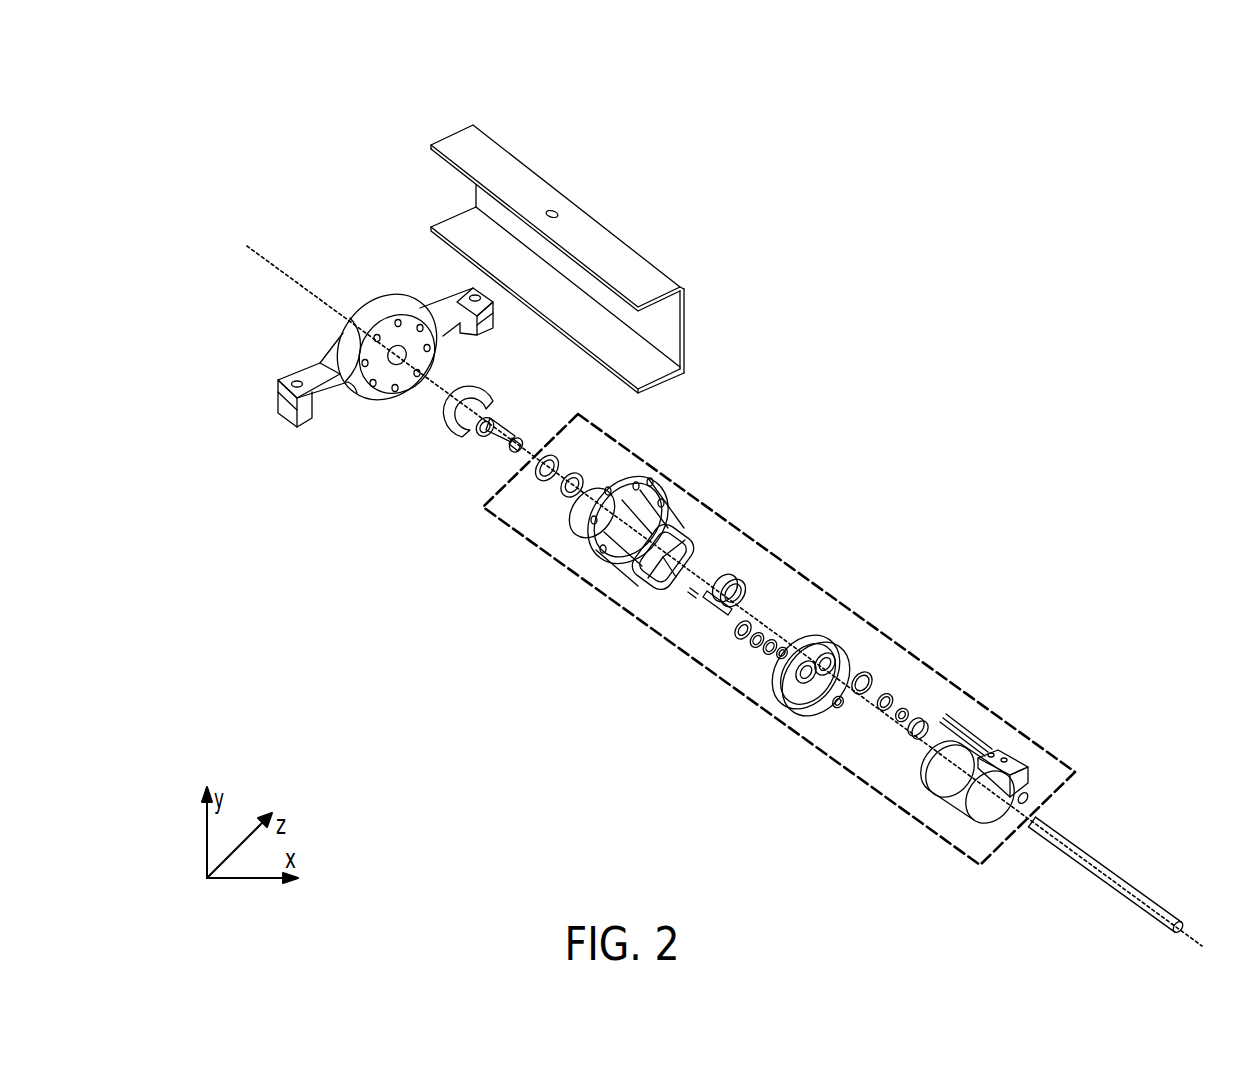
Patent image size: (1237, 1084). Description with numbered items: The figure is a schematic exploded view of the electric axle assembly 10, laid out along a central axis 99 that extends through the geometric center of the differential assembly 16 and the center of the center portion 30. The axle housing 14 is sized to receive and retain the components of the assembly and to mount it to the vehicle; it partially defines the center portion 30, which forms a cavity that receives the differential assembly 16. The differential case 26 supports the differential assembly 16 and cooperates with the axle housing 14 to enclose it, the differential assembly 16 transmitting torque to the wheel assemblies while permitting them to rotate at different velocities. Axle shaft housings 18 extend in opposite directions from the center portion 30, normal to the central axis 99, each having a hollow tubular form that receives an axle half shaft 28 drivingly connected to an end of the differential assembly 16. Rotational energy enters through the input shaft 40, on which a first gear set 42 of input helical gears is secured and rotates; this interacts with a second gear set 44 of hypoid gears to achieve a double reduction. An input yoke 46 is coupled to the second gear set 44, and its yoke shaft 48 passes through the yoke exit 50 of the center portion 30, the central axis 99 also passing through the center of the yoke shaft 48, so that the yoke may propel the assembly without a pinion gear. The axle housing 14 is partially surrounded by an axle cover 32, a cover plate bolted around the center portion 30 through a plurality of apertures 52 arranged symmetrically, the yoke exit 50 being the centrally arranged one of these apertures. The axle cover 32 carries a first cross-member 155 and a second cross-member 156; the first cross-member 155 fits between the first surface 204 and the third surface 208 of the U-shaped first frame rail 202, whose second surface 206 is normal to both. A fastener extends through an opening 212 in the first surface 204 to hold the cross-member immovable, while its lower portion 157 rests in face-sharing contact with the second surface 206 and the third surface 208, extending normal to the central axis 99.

The electric axle assembly 10 is at (645, 123).
The axle housing 14 is at (629, 545).
The differential assembly 16 is at (888, 545).
The axle shaft housing 18 is at (311, 424).
The differential case 26 is at (782, 727).
The axle half shaft 28 is at (389, 372).
The center portion 30 is at (370, 348).
The axle cover 32 is at (360, 300).
The input shaft 40 is at (1136, 886).
The first gear set 42 is at (895, 772).
The second gear set 44 is at (628, 600).
The input yoke 46 is at (465, 440).
The yoke shaft 48 is at (513, 426).
The yoke exit 50 is at (393, 385).
The apertures 52 is at (362, 362).
The central axis 99 is at (283, 265).
The first cross-member 155 is at (452, 298).
The second cross-member 156 is at (278, 378).
The lower portion 157 is at (283, 420).
The first frame rail 202 is at (525, 226).
The first surface 204 is at (552, 185).
The second surface 206 is at (476, 192).
The third surface 208 is at (432, 224).
The opening 212 is at (554, 210).